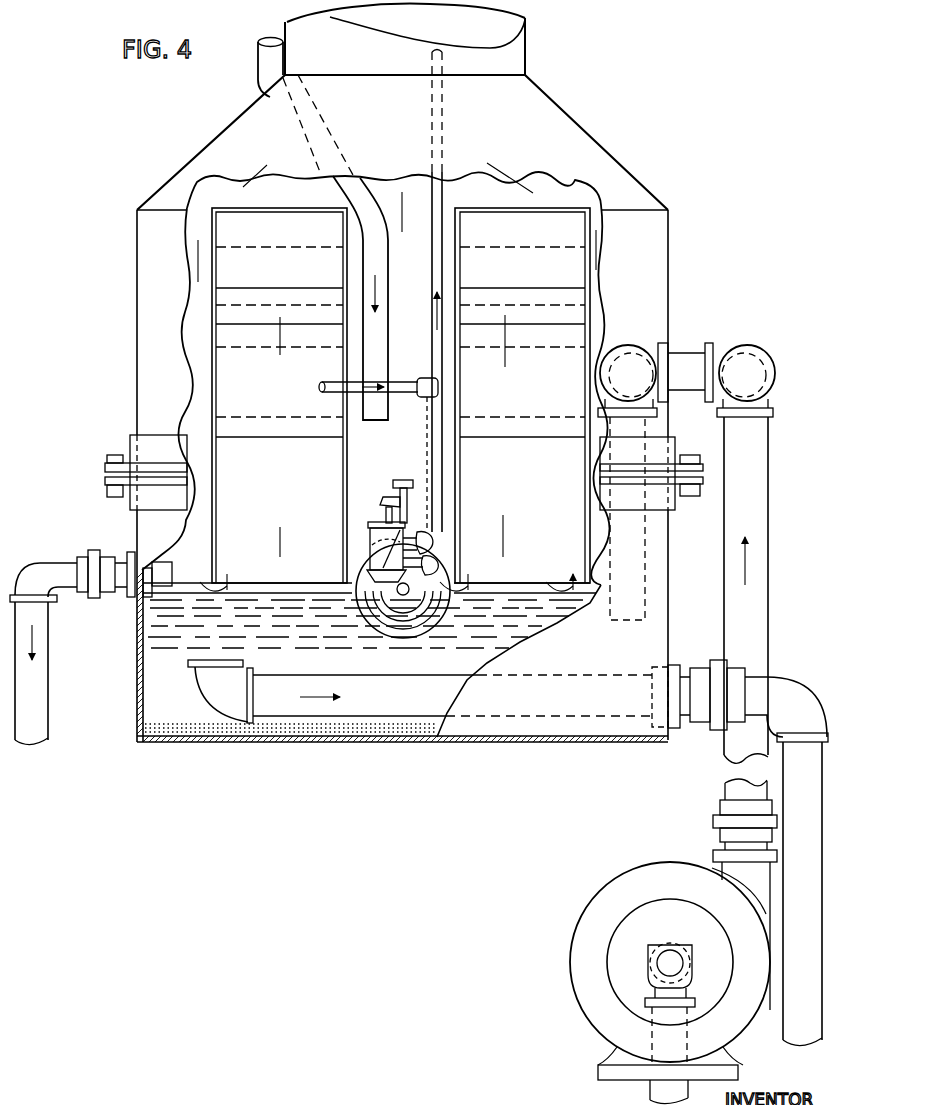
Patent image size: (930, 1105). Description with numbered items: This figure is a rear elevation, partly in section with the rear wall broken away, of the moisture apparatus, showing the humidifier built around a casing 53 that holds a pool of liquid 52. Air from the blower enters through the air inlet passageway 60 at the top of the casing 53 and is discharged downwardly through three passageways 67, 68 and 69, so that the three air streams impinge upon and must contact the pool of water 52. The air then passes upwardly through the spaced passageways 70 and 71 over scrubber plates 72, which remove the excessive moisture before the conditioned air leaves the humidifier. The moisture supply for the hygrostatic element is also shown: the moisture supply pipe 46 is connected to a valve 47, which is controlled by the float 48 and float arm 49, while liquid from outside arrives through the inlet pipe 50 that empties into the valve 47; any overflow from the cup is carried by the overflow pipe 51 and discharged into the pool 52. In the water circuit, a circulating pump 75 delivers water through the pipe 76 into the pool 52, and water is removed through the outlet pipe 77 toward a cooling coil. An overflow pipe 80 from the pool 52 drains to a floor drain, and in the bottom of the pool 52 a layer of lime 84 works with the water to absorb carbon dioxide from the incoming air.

The moisture supply pipe 46 is at (443, 195).
The valve 47 is at (368, 534).
The float 48 is at (358, 571).
The float arm 49 is at (386, 514).
The inlet pipe 50 is at (411, 397).
The overflow pipe 51 is at (254, 77).
The pool of liquid 52 is at (529, 583).
The humidifier casing 53 is at (670, 258).
The air inlet passageway 60 is at (530, 60).
The passageway 67 is at (190, 340).
The passageway 68 is at (412, 314).
The passageway 69 is at (602, 303).
The spaced passageway 70 is at (336, 450).
The spaced passageway 71 is at (473, 450).
The scrubber plates 72 is at (243, 306).
The circulating pump 75 is at (570, 932).
The pipe 76 is at (767, 616).
The outlet pipe 77 is at (804, 708).
The overflow pipe 80 is at (50, 652).
The layer of lime 84 is at (200, 741).